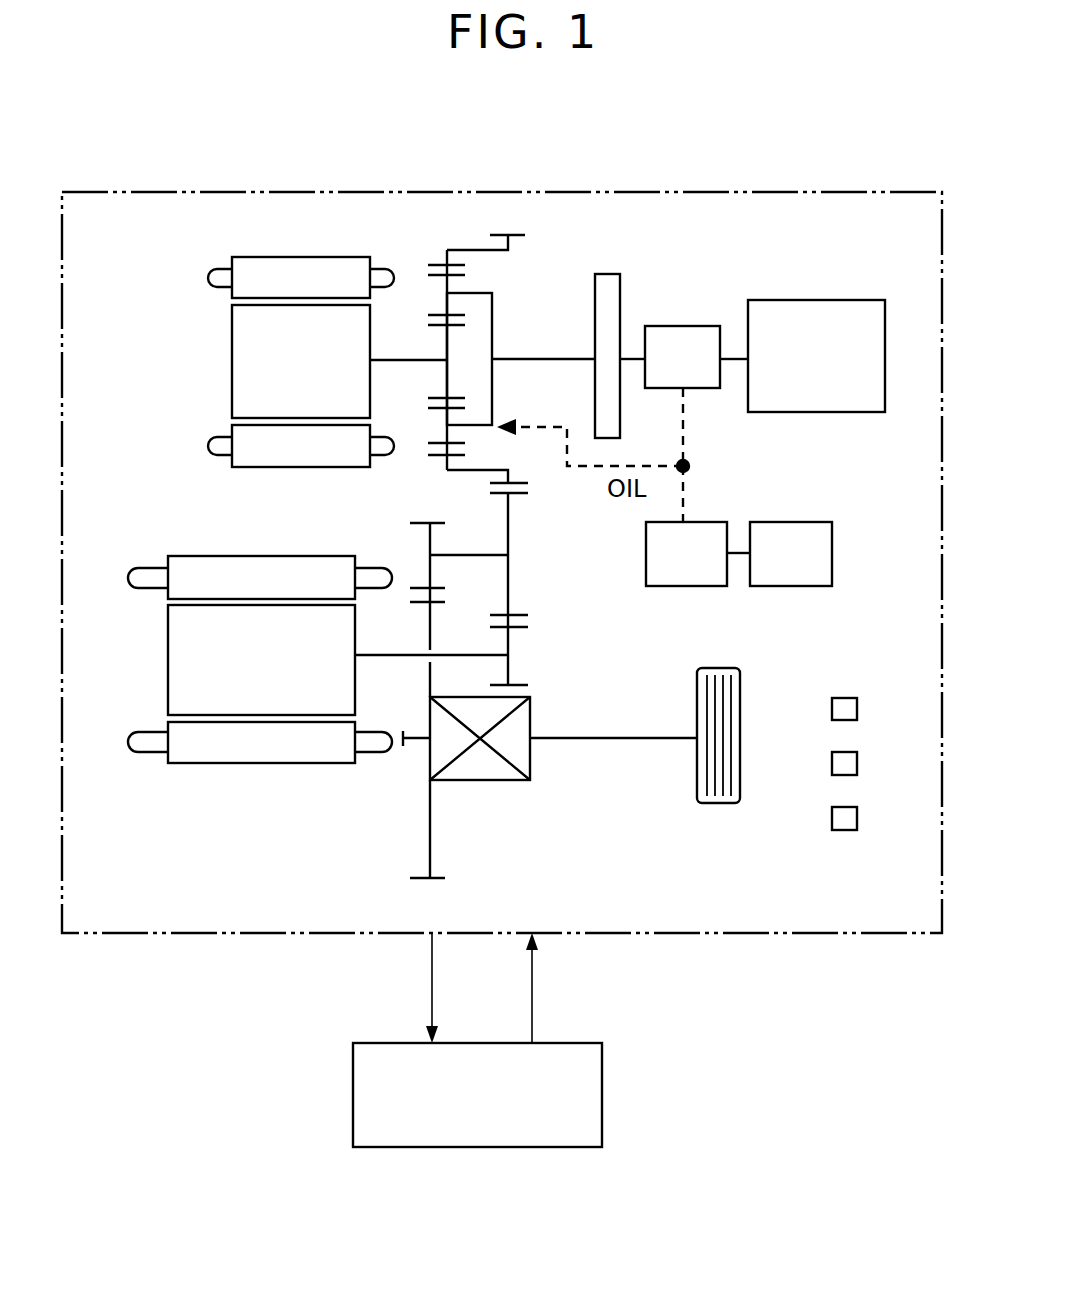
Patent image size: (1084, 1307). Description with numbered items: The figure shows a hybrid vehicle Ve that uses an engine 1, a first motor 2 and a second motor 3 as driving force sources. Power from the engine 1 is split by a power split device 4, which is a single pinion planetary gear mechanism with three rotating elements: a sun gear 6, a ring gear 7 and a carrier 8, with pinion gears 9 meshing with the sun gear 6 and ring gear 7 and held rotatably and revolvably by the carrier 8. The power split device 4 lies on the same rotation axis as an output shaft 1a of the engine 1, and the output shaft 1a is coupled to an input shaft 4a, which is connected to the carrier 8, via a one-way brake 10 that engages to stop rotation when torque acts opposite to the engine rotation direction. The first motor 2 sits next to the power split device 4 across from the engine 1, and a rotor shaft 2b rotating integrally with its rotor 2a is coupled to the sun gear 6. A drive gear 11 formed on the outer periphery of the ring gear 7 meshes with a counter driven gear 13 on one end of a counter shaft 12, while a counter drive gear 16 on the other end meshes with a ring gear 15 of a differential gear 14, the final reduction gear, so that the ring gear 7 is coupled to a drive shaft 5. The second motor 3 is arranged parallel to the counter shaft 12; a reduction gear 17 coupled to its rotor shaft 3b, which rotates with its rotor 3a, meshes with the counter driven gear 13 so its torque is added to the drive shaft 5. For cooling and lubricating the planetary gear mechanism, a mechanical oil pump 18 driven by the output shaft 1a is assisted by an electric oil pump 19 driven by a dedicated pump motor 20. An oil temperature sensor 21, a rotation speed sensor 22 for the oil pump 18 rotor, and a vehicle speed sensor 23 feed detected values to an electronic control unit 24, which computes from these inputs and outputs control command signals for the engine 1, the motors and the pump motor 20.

The engine 1 is at (818, 300).
The output shaft 1a is at (632, 352).
The first motor 2 is at (268, 343).
The rotor 2a is at (245, 383).
The rotor shaft 2b is at (396, 362).
The second motor 3 is at (246, 617).
The rotor 3a is at (175, 661).
The rotor shaft 3b is at (392, 655).
The power split device 4 is at (479, 346).
The input shaft 4a is at (572, 358).
The drive shaft 5 is at (610, 741).
The sun gear 6 is at (428, 318).
The ring gear 7 is at (433, 448).
The carrier 8 is at (494, 322).
The pinion gears 9 is at (465, 271).
The one-way brake 10 is at (634, 277).
The drive gear 11 is at (510, 234).
The counter shaft 12 is at (470, 553).
The counter driven gear 13 is at (528, 622).
The differential gear 14 is at (505, 795).
The ring gear 15 is at (429, 882).
The counter drive gear 16 is at (410, 522).
The reduction gear 17 is at (528, 686).
The oil pump 18 is at (700, 326).
The oil pump 19 is at (683, 587).
The pump motor 20 is at (790, 587).
The oil temperature sensor 21 is at (857, 708).
The rotation speed sensor 22 is at (857, 763).
The vehicle speed sensor 23 is at (857, 818).
The electronic control unit 24 is at (602, 1093).
The vehicle Ve is at (639, 191).